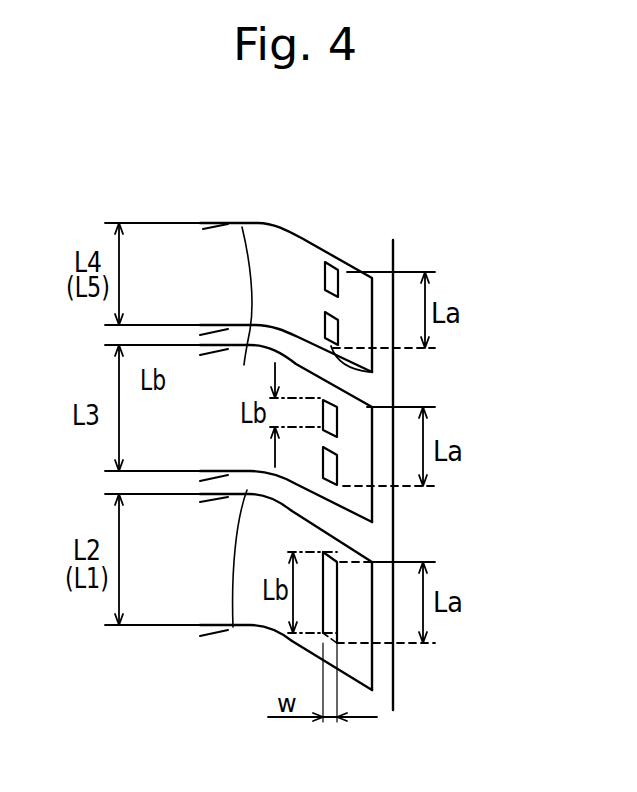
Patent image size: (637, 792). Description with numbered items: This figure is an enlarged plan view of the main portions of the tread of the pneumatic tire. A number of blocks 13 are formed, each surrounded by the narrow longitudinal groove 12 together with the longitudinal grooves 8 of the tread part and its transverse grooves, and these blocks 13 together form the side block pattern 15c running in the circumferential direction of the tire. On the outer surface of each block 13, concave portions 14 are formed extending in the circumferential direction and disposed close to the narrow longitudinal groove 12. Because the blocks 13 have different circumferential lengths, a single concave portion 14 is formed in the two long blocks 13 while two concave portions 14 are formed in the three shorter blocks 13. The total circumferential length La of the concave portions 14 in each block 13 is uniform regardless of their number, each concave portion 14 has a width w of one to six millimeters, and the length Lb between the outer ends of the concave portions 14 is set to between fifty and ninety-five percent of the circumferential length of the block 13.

The longitudinal groove 8 is at (284, 338).
The narrow longitudinal groove 12 is at (388, 672).
The block 13 is at (264, 252).
The concave portion 14 is at (330, 403).
The side block pattern 15c is at (313, 204).